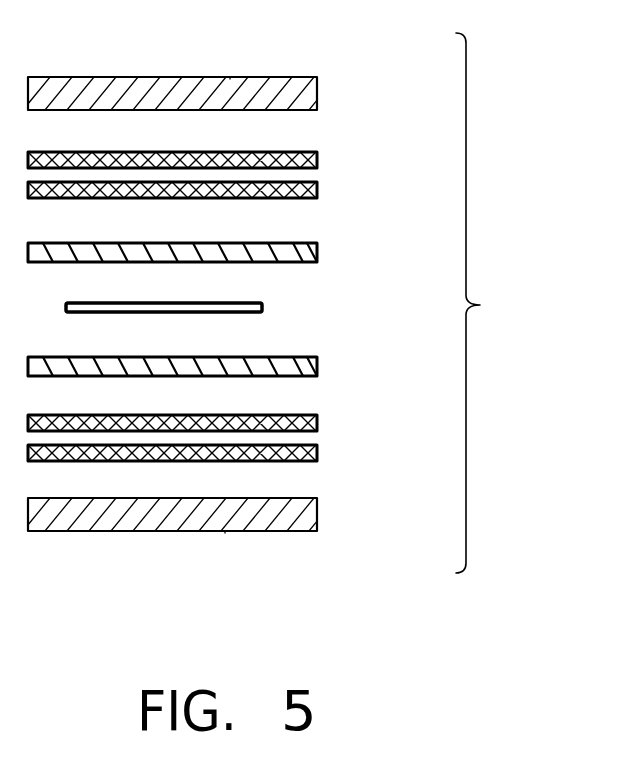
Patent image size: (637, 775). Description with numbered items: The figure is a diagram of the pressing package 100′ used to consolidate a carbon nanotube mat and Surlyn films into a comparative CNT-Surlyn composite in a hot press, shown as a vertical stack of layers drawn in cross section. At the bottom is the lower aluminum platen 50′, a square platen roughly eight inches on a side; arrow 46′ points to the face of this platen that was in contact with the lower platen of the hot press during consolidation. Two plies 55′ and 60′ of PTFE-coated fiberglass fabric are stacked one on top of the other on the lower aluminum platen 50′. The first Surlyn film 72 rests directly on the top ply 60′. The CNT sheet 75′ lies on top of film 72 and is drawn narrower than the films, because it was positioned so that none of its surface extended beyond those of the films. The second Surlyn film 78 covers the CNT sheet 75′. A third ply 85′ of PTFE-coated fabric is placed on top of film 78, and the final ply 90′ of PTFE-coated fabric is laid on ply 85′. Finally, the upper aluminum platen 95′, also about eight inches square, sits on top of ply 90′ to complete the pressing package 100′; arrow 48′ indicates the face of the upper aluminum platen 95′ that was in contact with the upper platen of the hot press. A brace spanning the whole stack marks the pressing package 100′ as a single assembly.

The upper aluminum platen 95′ is at (317, 93).
The arrow 48′ is at (230, 77).
The final ply of PTFE-coated fabric 90′ is at (317, 160).
The third ply of PTFE-coated fabric 85′ is at (317, 190).
The second film of Surlyn 8920 78 is at (317, 252).
The CNT sheet 75′ is at (263, 307).
The first film of Surlyn 8920 72 is at (317, 366).
The top ply of PTFE-coated fiberglass fabric 60′ is at (317, 424).
The ply of PTFE-coated fiberglass fabric 55′ is at (317, 454).
The lower aluminum platen 50′ is at (317, 514).
The arrow 46′ is at (225, 532).
The pressing package 100′ is at (503, 303).